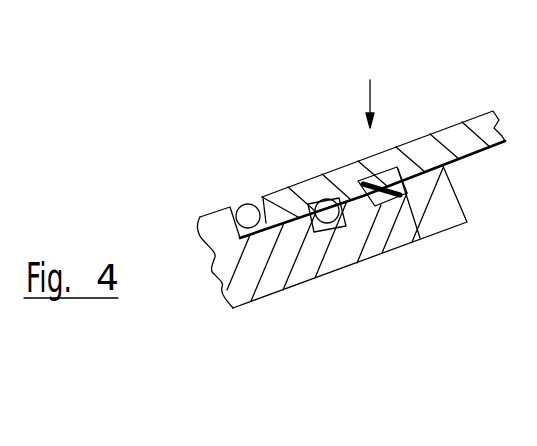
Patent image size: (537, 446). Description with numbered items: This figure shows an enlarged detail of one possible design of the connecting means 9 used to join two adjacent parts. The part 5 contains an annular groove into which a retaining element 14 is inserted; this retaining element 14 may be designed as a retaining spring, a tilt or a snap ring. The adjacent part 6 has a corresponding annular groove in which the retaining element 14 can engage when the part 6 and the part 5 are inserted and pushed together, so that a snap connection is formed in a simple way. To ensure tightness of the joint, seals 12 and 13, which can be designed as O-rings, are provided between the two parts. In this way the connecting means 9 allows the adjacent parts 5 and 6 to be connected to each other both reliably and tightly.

The part 5 is at (270, 283).
The part 6 is at (477, 127).
The connecting means 9 is at (370, 84).
The seal 12 is at (246, 212).
The seal 13 is at (327, 208).
The retaining element 14 is at (377, 207).